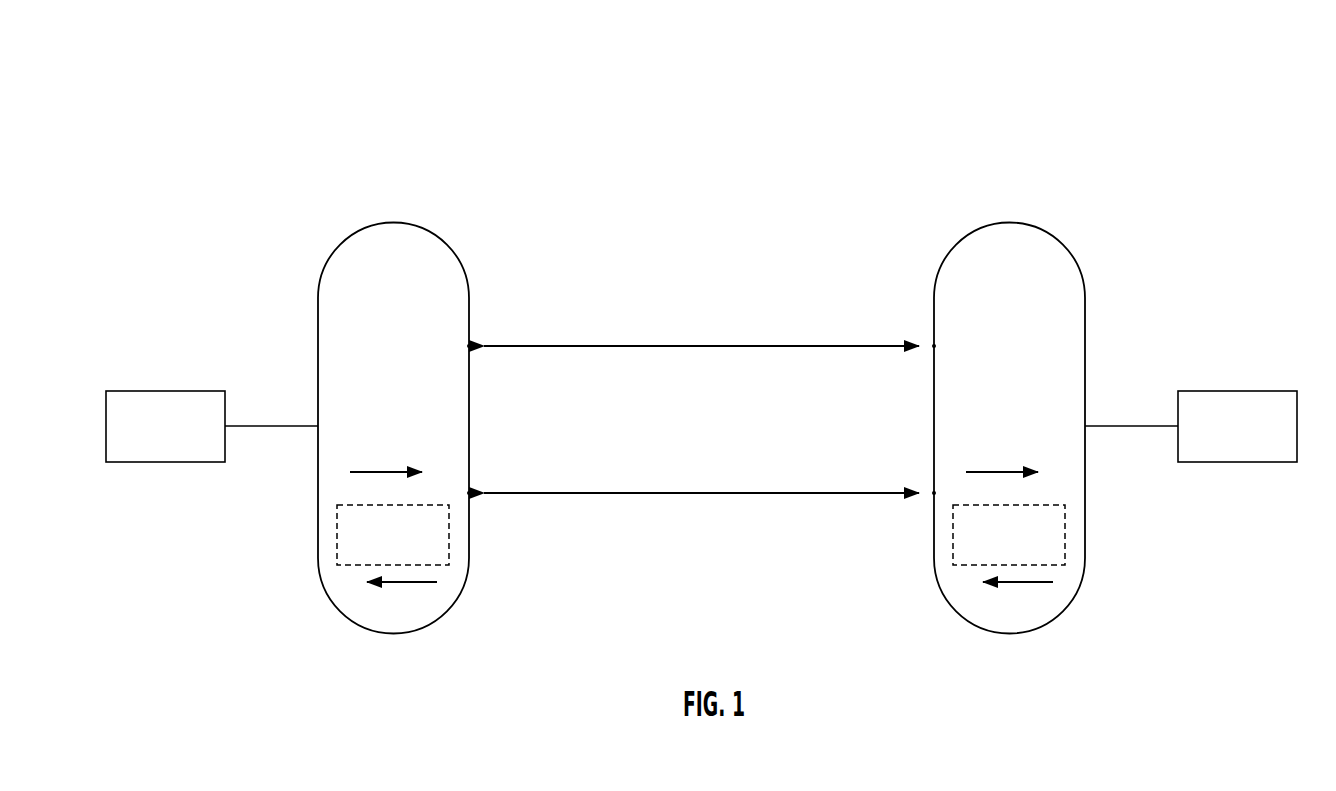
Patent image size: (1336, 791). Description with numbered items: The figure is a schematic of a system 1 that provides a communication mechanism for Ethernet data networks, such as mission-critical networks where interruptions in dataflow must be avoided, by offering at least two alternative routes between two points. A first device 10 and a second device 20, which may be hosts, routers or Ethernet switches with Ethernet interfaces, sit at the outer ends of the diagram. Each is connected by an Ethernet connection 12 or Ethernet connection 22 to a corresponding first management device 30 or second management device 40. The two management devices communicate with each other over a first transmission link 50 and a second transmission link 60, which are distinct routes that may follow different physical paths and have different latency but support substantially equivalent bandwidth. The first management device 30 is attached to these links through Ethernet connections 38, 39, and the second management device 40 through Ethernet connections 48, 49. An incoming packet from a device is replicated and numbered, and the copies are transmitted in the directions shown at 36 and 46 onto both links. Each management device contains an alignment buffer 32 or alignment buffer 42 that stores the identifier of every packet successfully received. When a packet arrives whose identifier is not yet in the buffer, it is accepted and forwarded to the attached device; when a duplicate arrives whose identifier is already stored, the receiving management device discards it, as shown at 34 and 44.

The system 1 is at (244, 154).
The first device 10 is at (165, 391).
The Ethernet connection 12 is at (270, 426).
The second device 20 is at (1238, 391).
The Ethernet connection 22 is at (1133, 426).
The first management device 30 is at (457, 258).
The alignment buffer 32 is at (449, 546).
The discarded packet 34 is at (394, 582).
The transmission direction 36 is at (389, 472).
The Ethernet connection 38 is at (467, 345).
The Ethernet connection 39 is at (469, 493).
The second management device 40 is at (1073, 258).
The alignment buffer 42 is at (1065, 546).
The discarded packet 44 is at (1010, 582).
The transmission direction 46 is at (1003, 472).
The Ethernet connection 48 is at (936, 345).
The Ethernet connection 49 is at (936, 493).
The first transmission link 50 is at (688, 346).
The second transmission link 60 is at (688, 493).